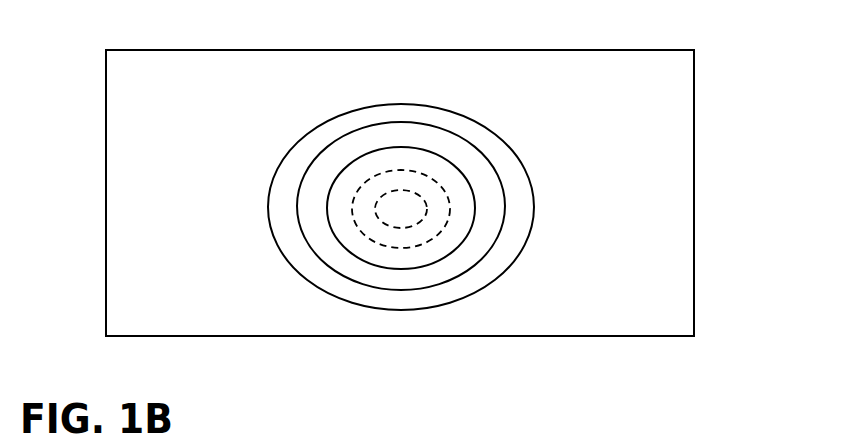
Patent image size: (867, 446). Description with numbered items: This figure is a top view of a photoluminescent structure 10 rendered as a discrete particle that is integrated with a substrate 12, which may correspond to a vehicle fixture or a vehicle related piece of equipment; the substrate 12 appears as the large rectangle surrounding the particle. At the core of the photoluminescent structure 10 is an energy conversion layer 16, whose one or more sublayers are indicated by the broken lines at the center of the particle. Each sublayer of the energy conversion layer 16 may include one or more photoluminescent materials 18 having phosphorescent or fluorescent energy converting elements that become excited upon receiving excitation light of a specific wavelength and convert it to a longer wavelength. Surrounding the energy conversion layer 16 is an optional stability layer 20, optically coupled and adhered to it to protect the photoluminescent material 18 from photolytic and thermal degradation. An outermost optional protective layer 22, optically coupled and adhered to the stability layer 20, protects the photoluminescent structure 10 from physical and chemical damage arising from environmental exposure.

The photoluminescent structure 10 is at (309, 109).
The substrate 12 is at (694, 148).
The energy conversion layer 16 is at (453, 253).
The photoluminescent material 18 is at (385, 228).
The stability layer 20 is at (463, 140).
The protective layer 22 is at (436, 106).